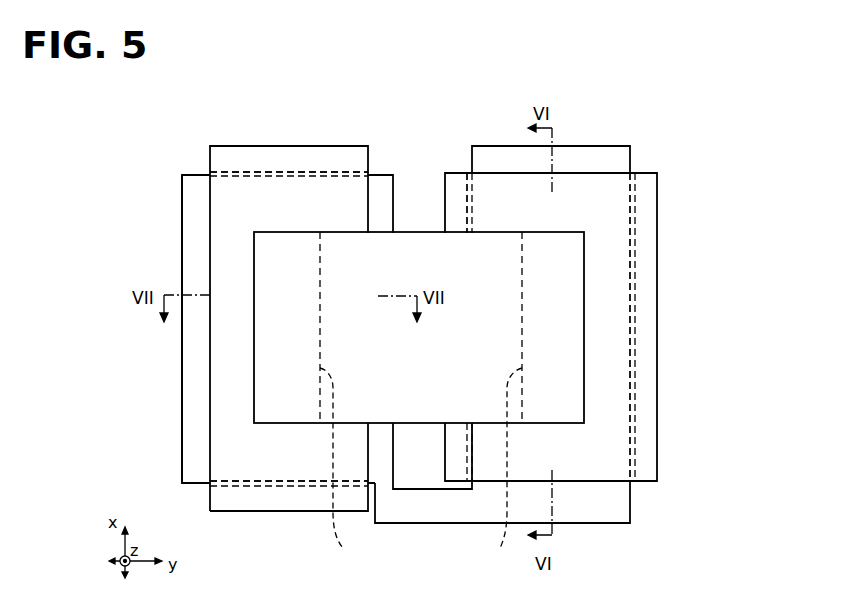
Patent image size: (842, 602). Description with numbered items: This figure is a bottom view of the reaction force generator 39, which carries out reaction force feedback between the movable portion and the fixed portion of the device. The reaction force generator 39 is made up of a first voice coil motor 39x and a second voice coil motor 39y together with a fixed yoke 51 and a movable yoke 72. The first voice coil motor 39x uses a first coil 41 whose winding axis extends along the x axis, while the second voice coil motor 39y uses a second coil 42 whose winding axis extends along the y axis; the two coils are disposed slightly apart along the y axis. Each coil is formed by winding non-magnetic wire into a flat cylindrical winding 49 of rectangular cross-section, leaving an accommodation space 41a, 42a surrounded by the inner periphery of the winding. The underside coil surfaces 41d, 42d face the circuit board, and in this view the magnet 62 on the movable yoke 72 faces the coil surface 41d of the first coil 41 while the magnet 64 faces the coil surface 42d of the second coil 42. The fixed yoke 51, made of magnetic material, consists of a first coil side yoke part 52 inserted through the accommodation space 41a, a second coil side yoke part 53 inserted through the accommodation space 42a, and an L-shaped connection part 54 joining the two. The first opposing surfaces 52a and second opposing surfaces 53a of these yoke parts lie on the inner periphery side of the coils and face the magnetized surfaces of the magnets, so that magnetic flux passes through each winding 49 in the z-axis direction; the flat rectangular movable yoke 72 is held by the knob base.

The reaction force generator 39 is at (634, 130).
The first voice coil motor 39x is at (667, 168).
The second voice coil motor 39y is at (193, 138).
The first coil 41 is at (657, 260).
The accommodation space 41a is at (472, 193).
The coil surface 41d is at (640, 313).
The second coil 42 is at (263, 146).
The accommodation space 42a is at (237, 176).
The coil surface 42d is at (243, 495).
The winding 49 is at (479, 300).
The fixed yoke 51 is at (182, 347).
The first coil side yoke part 52 is at (554, 130).
The first opposing surfaces 52a is at (600, 155).
The second coil side yoke part 53 is at (258, 330).
The second opposing surfaces 53a is at (192, 400).
The connection part 54 is at (447, 500).
The magnet 62 is at (503, 472).
The magnet 64 is at (339, 472).
The movable yoke 72 is at (403, 247).